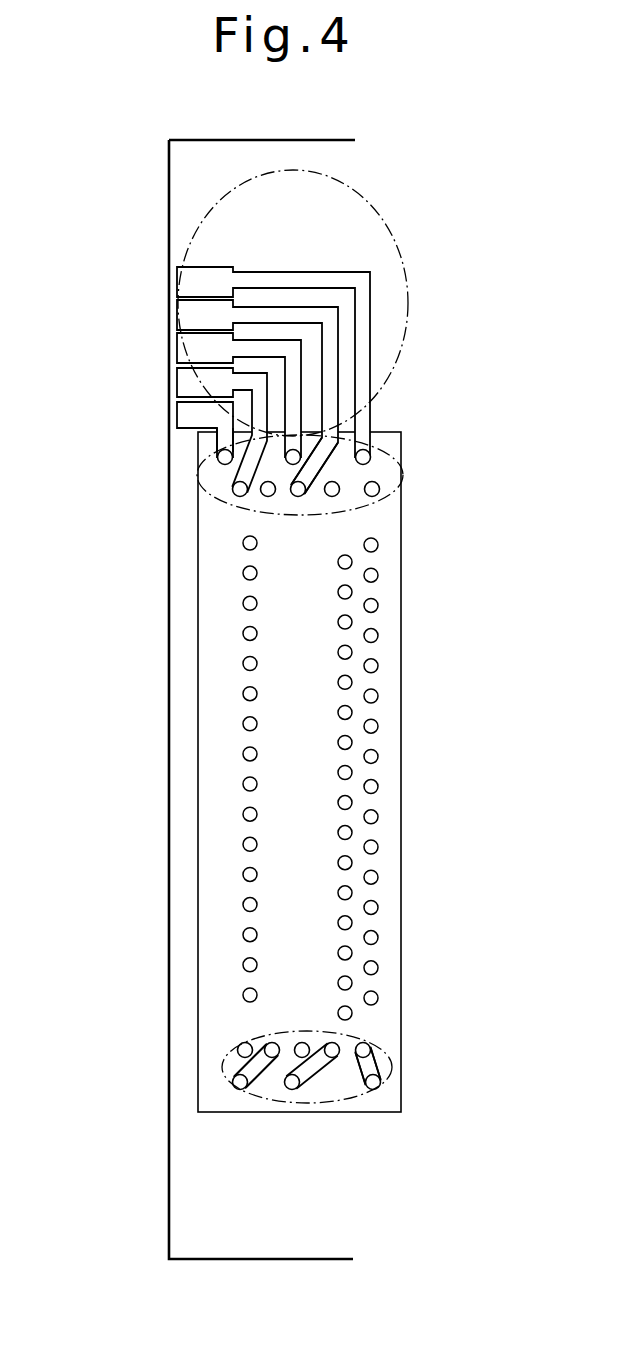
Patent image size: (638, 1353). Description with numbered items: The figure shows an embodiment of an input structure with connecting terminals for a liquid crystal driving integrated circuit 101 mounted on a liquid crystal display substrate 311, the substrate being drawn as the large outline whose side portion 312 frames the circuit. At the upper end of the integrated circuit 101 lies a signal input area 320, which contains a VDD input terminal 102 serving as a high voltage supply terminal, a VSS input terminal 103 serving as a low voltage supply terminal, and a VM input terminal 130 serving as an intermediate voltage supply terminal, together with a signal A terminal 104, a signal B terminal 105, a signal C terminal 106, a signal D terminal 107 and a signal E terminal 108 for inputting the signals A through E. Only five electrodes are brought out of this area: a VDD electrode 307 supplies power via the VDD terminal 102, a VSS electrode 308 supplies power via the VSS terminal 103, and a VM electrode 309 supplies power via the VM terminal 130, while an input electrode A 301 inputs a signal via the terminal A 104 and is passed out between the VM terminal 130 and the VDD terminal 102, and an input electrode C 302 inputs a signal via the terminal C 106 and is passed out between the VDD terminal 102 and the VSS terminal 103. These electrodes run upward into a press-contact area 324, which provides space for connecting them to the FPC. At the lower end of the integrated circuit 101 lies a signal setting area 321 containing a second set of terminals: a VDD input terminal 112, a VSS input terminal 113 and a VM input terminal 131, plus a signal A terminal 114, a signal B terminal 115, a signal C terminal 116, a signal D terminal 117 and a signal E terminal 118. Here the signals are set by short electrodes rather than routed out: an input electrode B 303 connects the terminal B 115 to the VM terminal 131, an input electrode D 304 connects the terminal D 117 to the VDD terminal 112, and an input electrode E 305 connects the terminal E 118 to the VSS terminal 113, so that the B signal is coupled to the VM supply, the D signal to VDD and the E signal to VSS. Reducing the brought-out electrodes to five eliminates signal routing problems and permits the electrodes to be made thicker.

The liquid crystal driving integrated circuit 101 is at (402, 653).
The VDD input terminal 102 is at (297, 498).
The VSS input terminal 103 is at (335, 438).
The signal A terminal 104 is at (232, 488).
The signal B terminal 105 is at (262, 495).
The signal C terminal 106 is at (318, 481).
The signal D terminal 107 is at (322, 500).
The signal E terminal 108 is at (382, 489).
The VDD input terminal 112 is at (290, 1092).
The VSS input terminal 113 is at (378, 1090).
The signal A terminal 114 is at (238, 1050).
The signal B terminal 115 is at (265, 1045).
The signal C terminal 116 is at (304, 1042).
The signal D terminal 117 is at (358, 1043).
The signal E terminal 118 is at (379, 1058).
The VM input terminal 130 is at (215, 452).
The VM input terminal 131 is at (233, 1080).
The input electrode A 301 is at (177, 384).
The input electrode C 302 is at (177, 316).
The input electrode B 303 is at (240, 1093).
The input electrode D 304 is at (312, 1090).
The input electrode E 305 is at (392, 1068).
The VDD electrode 307 is at (177, 350).
The VSS electrode 308 is at (177, 282).
The VM electrode 309 is at (177, 417).
The liquid crystal display substrate 311 is at (242, 152).
The housing side wall 312 is at (169, 598).
The signal input area 320 is at (400, 437).
The signal setting area 321 is at (410, 1088).
The press-contact area 324 is at (408, 255).